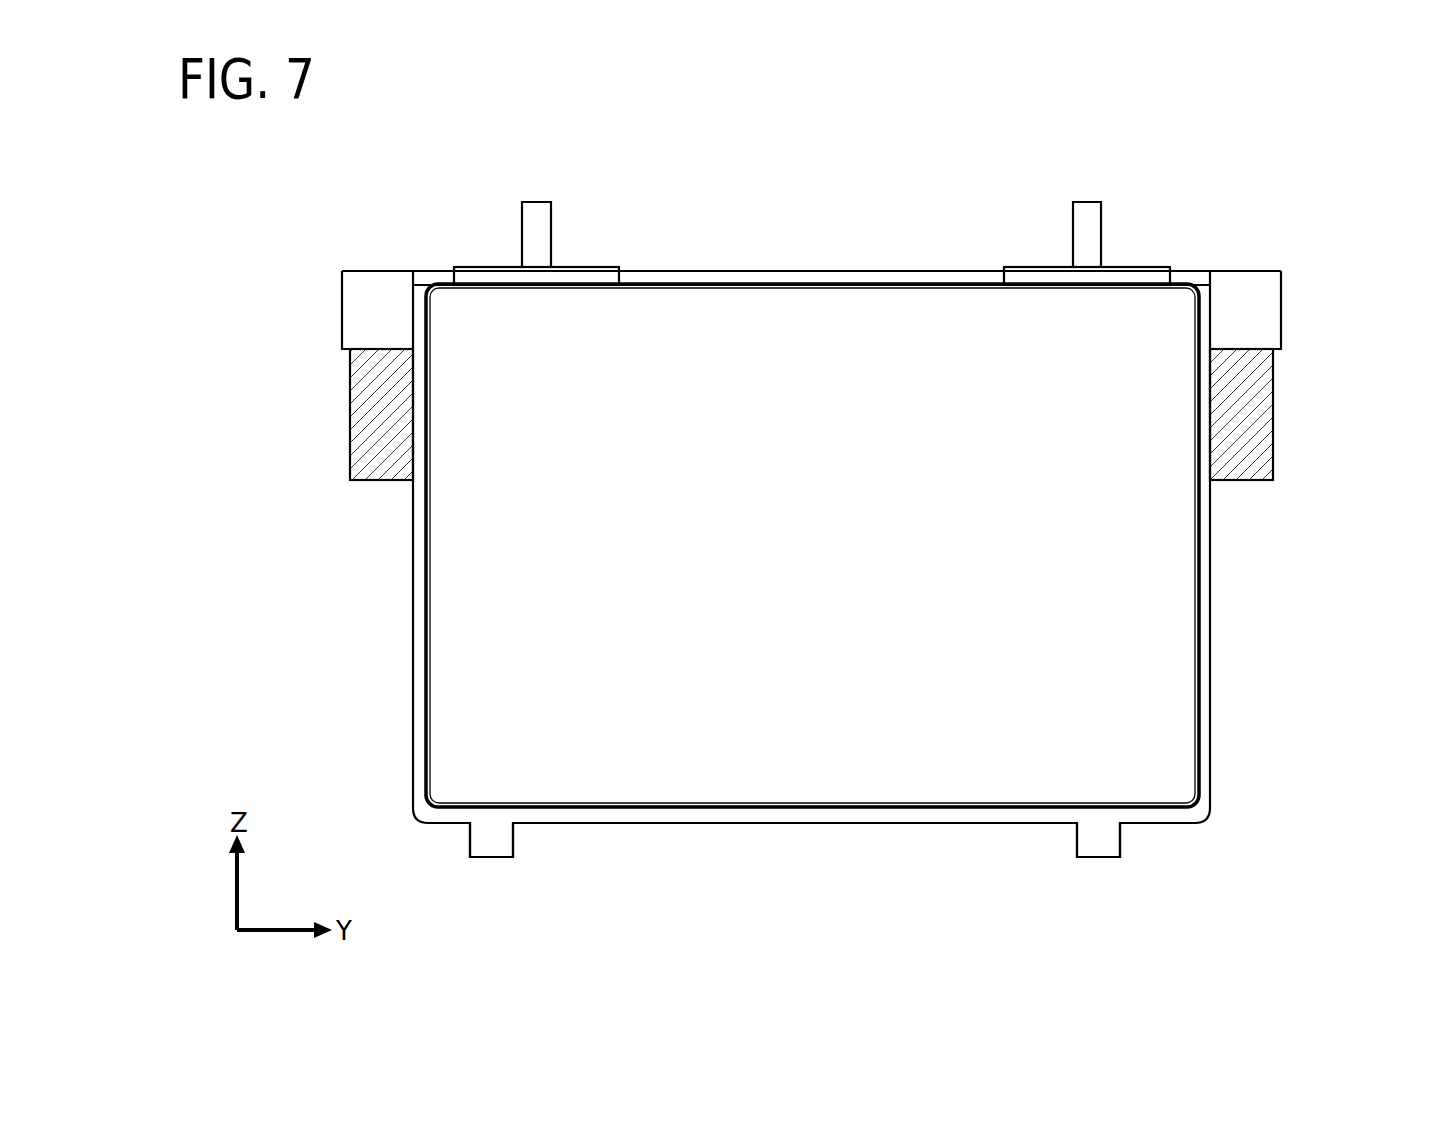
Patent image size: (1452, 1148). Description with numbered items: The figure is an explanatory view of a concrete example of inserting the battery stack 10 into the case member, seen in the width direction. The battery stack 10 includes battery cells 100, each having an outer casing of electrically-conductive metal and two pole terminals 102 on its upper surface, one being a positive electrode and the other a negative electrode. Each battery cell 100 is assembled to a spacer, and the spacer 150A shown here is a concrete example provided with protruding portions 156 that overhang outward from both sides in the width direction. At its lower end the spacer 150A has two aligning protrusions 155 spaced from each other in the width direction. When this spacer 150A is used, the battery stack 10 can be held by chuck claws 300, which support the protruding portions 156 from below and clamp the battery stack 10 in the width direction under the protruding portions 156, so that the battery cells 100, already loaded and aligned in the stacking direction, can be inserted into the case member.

The battery stack 10 is at (1168, 233).
The battery cell 100 is at (837, 563).
The pole terminal 102 is at (532, 208).
The spacer 150A is at (801, 267).
The aligning protrusion 155 is at (505, 846).
The protruding portion 156 is at (358, 307).
The chuck claw 300 is at (365, 408).